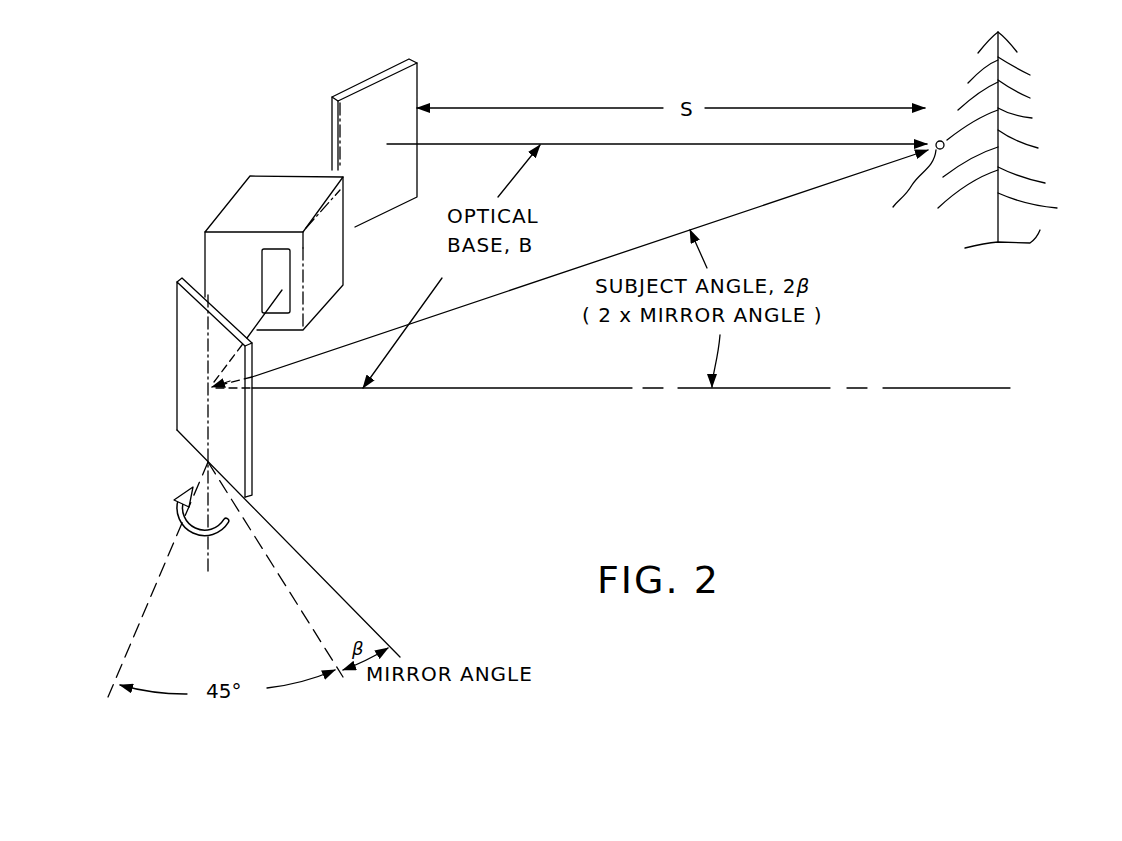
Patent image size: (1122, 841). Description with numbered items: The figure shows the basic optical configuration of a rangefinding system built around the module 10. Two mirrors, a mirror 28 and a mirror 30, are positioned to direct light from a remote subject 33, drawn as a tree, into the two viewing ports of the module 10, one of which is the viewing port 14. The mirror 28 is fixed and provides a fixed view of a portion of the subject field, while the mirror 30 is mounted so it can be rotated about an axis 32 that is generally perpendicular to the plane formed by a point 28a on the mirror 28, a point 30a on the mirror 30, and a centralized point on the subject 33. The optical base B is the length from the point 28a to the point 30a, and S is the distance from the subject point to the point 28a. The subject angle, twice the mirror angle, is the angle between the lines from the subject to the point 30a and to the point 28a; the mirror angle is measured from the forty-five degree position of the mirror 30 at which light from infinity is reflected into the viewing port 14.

The module 10 is at (260, 173).
The viewing port 14 is at (276, 267).
The mirror 28 is at (377, 72).
The point 28a is at (387, 143).
The mirror 30 is at (176, 352).
The point 30a is at (214, 397).
The axis 32 is at (210, 540).
The remote subject 33 is at (1023, 140).